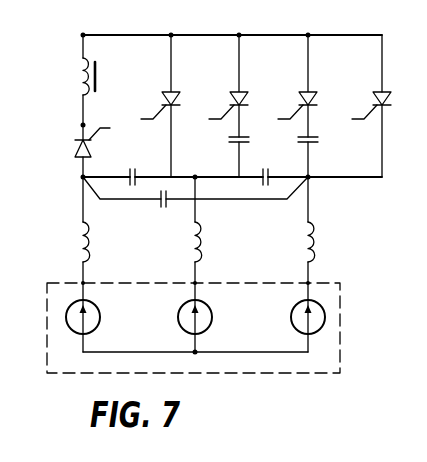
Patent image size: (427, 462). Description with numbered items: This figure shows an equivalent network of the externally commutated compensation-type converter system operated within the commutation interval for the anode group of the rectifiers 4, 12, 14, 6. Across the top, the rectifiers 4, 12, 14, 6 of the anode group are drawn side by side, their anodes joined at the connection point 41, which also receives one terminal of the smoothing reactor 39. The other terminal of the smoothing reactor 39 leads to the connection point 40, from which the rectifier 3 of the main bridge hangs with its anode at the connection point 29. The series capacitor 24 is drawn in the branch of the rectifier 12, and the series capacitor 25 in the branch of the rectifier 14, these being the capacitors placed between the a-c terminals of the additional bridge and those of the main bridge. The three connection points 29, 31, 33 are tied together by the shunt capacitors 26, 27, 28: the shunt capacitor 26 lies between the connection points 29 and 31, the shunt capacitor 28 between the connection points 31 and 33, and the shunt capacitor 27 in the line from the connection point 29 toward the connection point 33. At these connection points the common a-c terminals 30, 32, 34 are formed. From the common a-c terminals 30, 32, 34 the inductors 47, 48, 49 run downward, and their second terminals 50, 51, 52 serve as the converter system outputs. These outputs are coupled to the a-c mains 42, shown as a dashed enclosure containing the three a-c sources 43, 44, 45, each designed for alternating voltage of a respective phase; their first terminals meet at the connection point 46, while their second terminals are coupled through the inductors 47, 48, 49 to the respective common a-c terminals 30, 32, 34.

The rectifier 3 is at (74, 148).
The rectifier 4 is at (168, 89).
The rectifier 6 is at (378, 90).
The rectifier 12 is at (236, 89).
The rectifier 14 is at (305, 89).
The series capacitor 24 is at (248, 134).
The series capacitor 25 is at (316, 134).
The shunt capacitor 26 is at (128, 173).
The shunt capacitor 27 is at (160, 204).
The shunt capacitor 28 is at (270, 174).
The connection point 29 is at (80, 177).
The common a-c terminal 30 is at (79, 200).
The connection point 31 is at (236, 177).
The common a-c terminal 32 is at (197, 190).
The connection point 33 is at (316, 187).
The common a-c terminal 34 is at (302, 207).
The smoothing reactor 39 is at (80, 76).
The connection point 40 is at (81, 125).
The connection point 41 is at (81, 36).
The a-c mains 42 is at (308, 379).
The a-c source 43 is at (100, 312).
The a-c source 44 is at (213, 312).
The a-c source 45 is at (292, 328).
The connection point 46 is at (192, 351).
The inductor 47 is at (88, 244).
The inductor 48 is at (200, 242).
The inductor 49 is at (316, 246).
The second terminal 50 is at (84, 283).
The second terminal 51 is at (196, 283).
The second terminal 52 is at (309, 283).